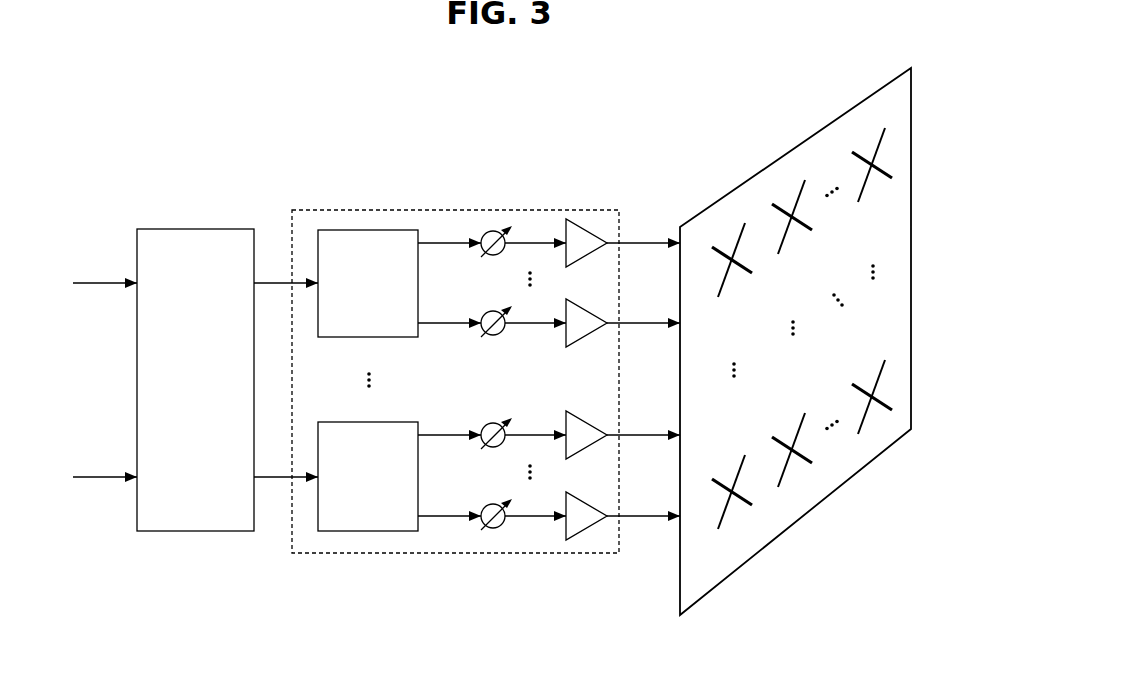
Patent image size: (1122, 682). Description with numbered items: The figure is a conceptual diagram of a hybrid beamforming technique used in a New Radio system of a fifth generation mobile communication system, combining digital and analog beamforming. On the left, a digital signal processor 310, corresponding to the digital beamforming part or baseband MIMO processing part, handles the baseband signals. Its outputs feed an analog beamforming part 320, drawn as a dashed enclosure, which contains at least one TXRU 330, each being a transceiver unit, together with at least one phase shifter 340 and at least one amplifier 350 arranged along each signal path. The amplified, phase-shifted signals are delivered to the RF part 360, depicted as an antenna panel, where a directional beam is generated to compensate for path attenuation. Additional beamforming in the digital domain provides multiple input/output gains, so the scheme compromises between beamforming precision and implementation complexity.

The digital signal processor 310 is at (195, 229).
The analog beamforming part 320 is at (456, 210).
The TXRU 330 is at (370, 230).
The phase shifter 340 is at (500, 529).
The amplifier 350 is at (590, 532).
The RF part 360 is at (795, 146).